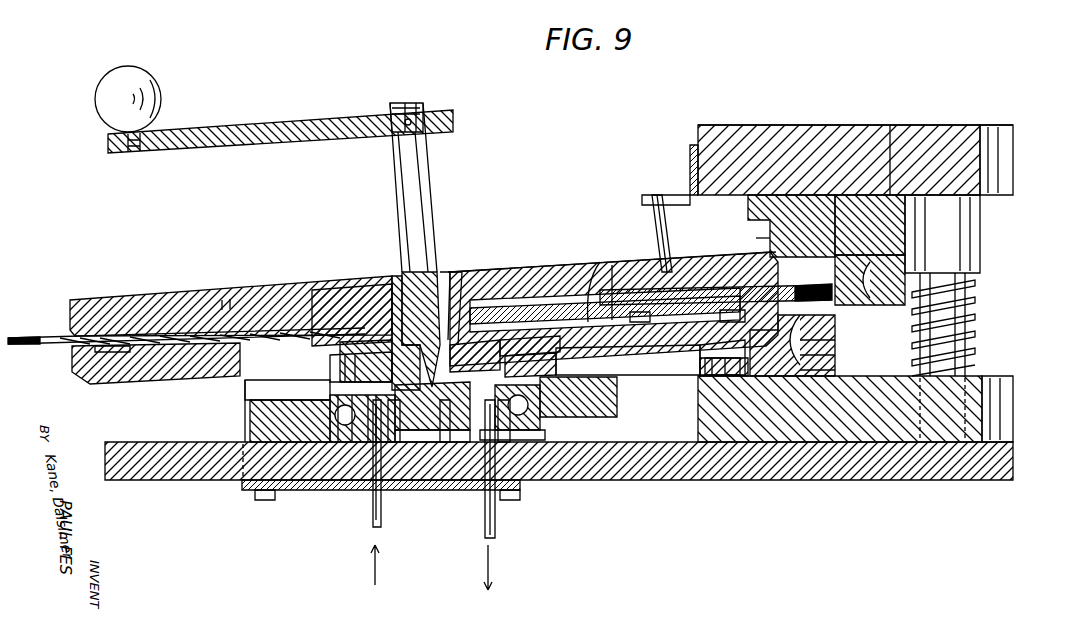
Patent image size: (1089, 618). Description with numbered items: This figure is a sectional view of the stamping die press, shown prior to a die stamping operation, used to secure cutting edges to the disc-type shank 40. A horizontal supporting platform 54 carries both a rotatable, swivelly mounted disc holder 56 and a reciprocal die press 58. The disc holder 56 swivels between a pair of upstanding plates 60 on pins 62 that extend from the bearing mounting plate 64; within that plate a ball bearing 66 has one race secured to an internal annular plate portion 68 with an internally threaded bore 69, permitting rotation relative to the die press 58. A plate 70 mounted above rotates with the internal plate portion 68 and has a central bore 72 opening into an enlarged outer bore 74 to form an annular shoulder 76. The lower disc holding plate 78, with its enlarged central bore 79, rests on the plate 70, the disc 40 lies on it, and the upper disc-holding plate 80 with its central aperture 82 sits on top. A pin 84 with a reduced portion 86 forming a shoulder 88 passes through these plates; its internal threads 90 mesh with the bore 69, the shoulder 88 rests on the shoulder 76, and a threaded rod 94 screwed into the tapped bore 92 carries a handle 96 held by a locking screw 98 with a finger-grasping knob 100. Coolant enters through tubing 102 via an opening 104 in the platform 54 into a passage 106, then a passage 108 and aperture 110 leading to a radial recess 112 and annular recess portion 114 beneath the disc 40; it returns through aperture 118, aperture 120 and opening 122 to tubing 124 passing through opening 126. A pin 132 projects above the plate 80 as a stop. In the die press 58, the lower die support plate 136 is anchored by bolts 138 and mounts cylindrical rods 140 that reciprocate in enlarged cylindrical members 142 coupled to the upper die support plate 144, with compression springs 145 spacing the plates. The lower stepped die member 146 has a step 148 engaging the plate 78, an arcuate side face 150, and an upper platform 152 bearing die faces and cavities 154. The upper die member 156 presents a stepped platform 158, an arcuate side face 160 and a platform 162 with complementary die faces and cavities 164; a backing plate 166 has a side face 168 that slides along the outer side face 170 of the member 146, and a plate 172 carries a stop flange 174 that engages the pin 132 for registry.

The disc-type shank 40 is at (55, 340).
The supporting platform 54 is at (678, 481).
The disc holder 56 is at (500, 243).
The die press 58 is at (956, 94).
The upstanding plates 60 is at (245, 402).
The pins 62 is at (535, 436).
The bearing mounting plate 64 is at (617, 386).
The ball bearing 66 is at (560, 420).
The internal annular plate portion 68 is at (408, 480).
The internally threaded bore 69 is at (448, 482).
The plate 70 is at (558, 364).
The central bore 72 is at (475, 351).
The enlarged outer bore 74 is at (478, 280).
The annular shoulder 76 is at (454, 268).
The lower disc holding plate 78 is at (198, 378).
The enlarged central bore 79 is at (354, 286).
The upper disc-holding plate 80 is at (150, 297).
The central aperture 82 is at (398, 288).
The pin 84 is at (444, 265).
The reduced portion 86 is at (440, 414).
The shoulder 88 is at (395, 358).
The internal threads 90 is at (432, 483).
The tapped bore 92 is at (412, 262).
The threaded rod 94 is at (400, 178).
The handle 96 is at (278, 126).
The locking screw 98 is at (412, 104).
The finger-grasping knob 100 is at (127, 87).
The tubing 102 is at (372, 516).
The opening 104 is at (356, 486).
The passage 106 is at (308, 485).
The passage 108 is at (308, 388).
The aperture 110 is at (324, 290).
The radial recess 112 is at (614, 272).
The annular recess portion 114 is at (135, 378).
The aperture 118 is at (544, 274).
The aperture 120 is at (538, 340).
The opening 122 is at (628, 360).
The tubing 124 is at (494, 530).
The opening 126 is at (508, 492).
The pin 132 is at (660, 226).
The lower die support plate 136 is at (1013, 395).
The bolts 138 is at (700, 370).
The cylindrical rods 140 is at (976, 290).
The enlarged cylindrical members 142 is at (1031, 290).
The upper die support plate 144 is at (1008, 157).
The compression springs 145 is at (980, 336).
The lower stepped die member 146 is at (836, 342).
The step 148 is at (725, 345).
The side face 150 is at (714, 314).
The upper platform 152 is at (836, 356).
The die faces and cavities 154 is at (810, 345).
The upper die member 156 is at (822, 195).
The stepped platform 158 is at (748, 226).
The arcuate side face 160 is at (758, 239).
The platform 162 is at (716, 283).
The die faces and cavities 164 is at (860, 260).
The backing plate 166 is at (890, 195).
The side face 168 is at (862, 305).
The outer side face 170 is at (836, 370).
The plate 172 is at (690, 150).
The stop flange 174 is at (655, 195).